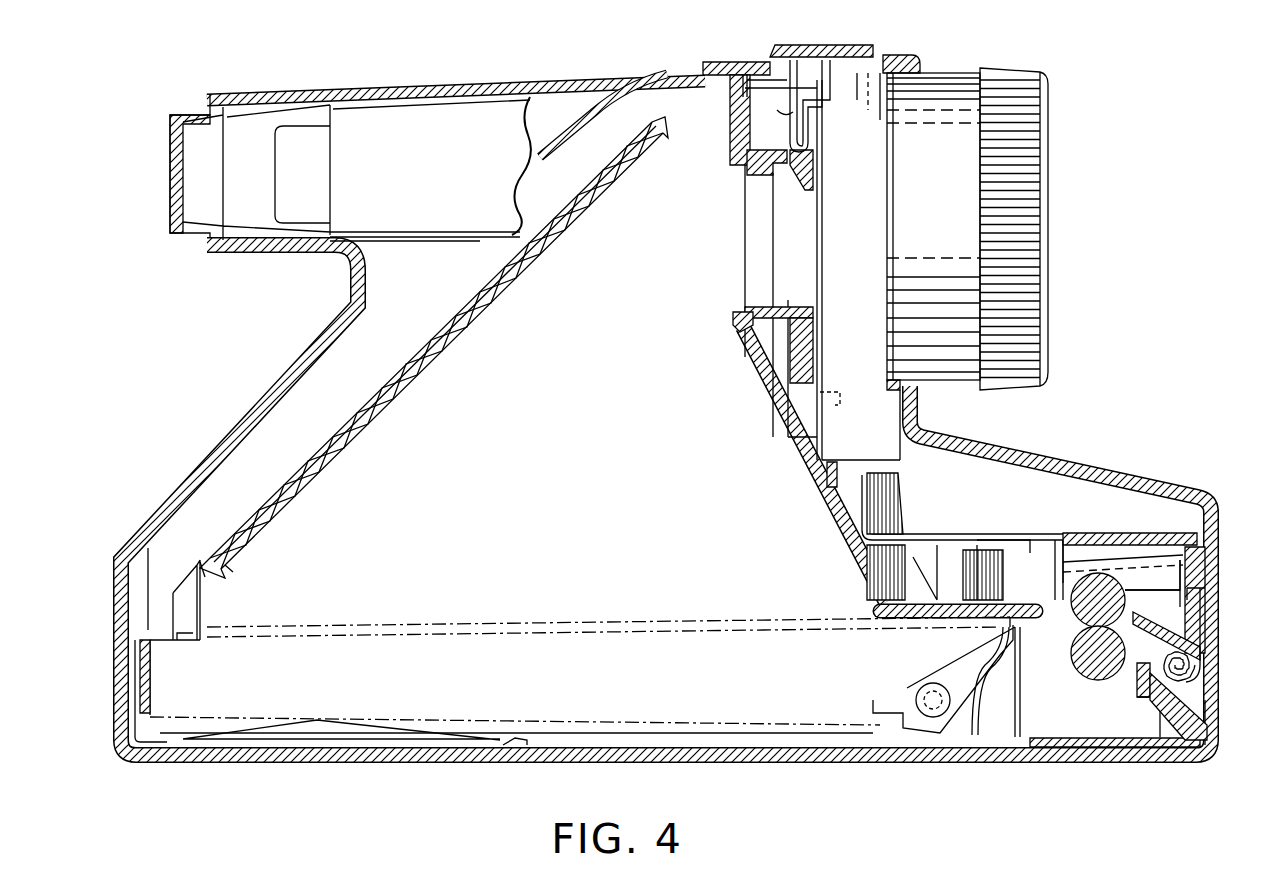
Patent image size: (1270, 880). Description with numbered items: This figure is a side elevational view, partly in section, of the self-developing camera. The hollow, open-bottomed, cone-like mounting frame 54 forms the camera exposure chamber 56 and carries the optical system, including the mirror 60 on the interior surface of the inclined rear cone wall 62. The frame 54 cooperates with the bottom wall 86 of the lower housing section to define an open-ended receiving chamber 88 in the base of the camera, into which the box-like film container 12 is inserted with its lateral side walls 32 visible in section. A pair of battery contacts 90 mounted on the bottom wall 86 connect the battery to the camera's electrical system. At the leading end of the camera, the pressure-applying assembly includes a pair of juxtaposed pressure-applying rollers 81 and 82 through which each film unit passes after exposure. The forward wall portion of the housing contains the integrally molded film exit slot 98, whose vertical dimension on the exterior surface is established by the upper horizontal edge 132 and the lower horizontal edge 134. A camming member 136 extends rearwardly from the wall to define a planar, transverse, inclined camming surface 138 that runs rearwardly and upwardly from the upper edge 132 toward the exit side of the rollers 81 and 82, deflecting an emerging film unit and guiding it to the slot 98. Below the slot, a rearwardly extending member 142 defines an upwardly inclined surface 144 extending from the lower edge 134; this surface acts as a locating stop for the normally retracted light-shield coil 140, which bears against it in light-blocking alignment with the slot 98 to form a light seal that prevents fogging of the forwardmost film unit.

The film container 12 is at (660, 716).
The lateral side walls 32 is at (757, 707).
The mounting frame 54 is at (598, 166).
The exposure chamber 56 is at (436, 401).
The mirror 60 is at (560, 242).
The inclined rear cone wall 62 is at (460, 310).
The pressure-applying roller 81 is at (1103, 585).
The pressure-applying roller 82 is at (1083, 655).
The bottom wall 86 is at (484, 758).
The receiving chamber 88 is at (185, 732).
The battery contacts 90 is at (268, 737).
The film exit slot 98 is at (1218, 661).
The upper horizontal edge 132 is at (1203, 636).
The lower horizontal edge 134 is at (1212, 716).
The camming member 136 is at (1178, 615).
The camming surface 138 is at (1150, 657).
The coil 140 is at (1200, 676).
The rearwardly extending member 142 is at (1137, 697).
The upwardly inclined surface 144 is at (1160, 690).